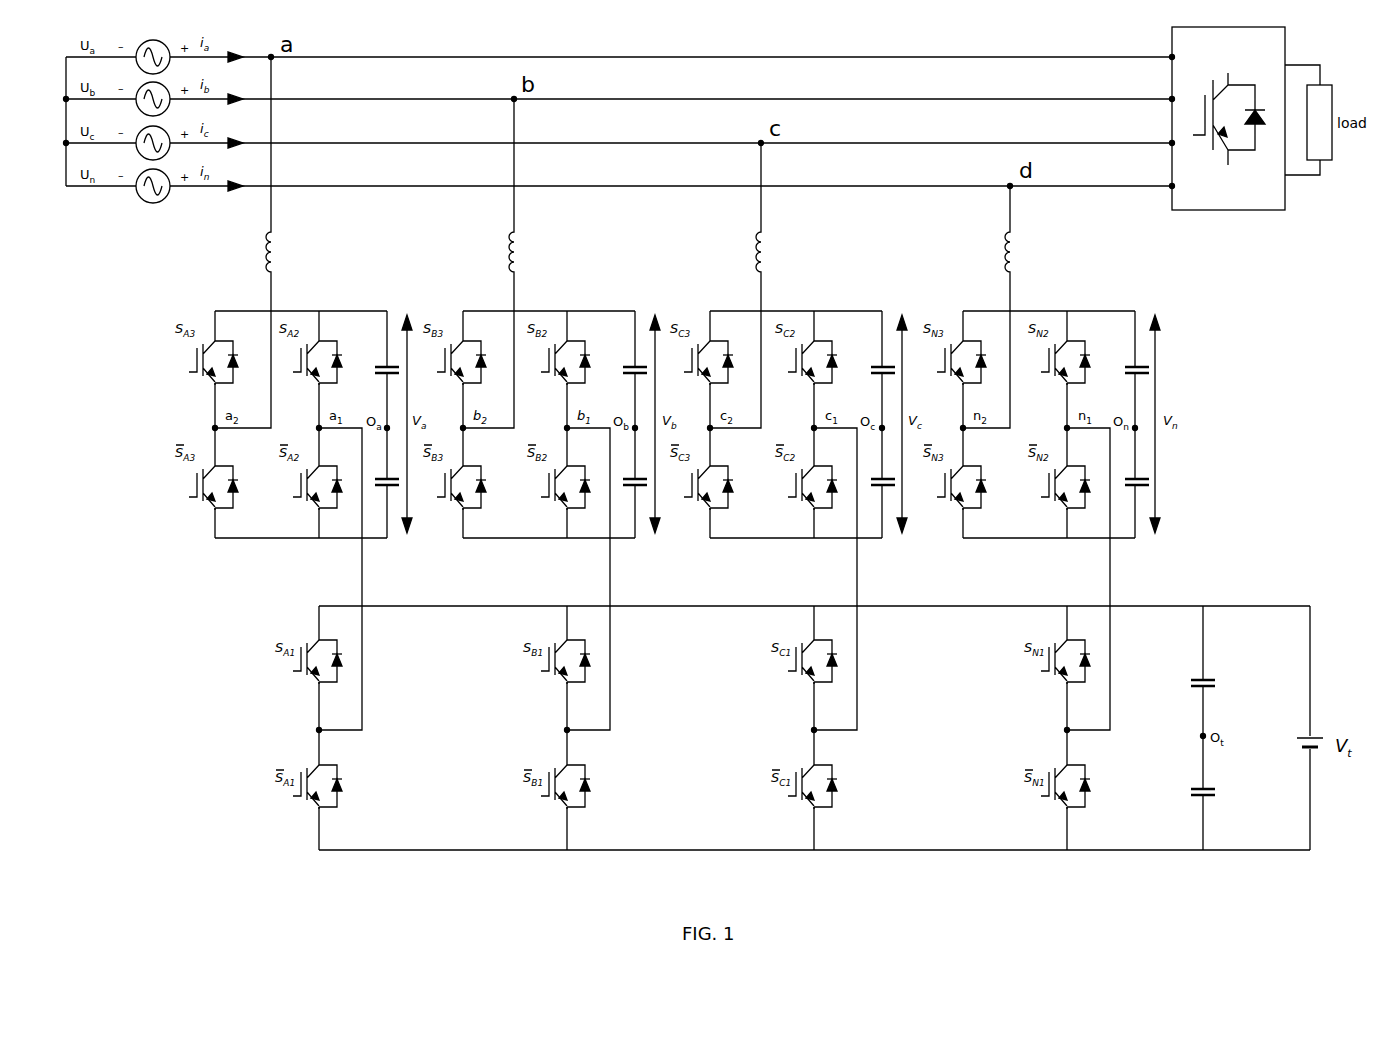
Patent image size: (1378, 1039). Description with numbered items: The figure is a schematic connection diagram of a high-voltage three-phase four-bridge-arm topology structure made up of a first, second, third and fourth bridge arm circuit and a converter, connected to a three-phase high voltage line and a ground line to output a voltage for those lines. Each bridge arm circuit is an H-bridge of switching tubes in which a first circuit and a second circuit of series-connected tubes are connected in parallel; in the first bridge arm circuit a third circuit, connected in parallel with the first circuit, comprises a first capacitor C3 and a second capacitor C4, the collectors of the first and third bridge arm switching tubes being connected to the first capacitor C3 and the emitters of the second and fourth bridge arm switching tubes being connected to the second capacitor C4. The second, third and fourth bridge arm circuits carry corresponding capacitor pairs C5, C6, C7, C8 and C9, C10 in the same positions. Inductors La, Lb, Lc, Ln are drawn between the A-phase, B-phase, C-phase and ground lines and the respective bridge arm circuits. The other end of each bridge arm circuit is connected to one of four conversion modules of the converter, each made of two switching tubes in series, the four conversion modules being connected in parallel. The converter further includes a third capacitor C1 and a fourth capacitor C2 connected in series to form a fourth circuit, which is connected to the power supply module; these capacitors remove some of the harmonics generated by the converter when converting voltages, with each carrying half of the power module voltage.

The third capacitor C1 is at (1209, 671).
The fourth capacitor C2 is at (1209, 780).
The first capacitor C3 is at (381, 363).
The second capacitor C4 is at (381, 475).
The capacitor C5 is at (629, 363).
The capacitor C6 is at (629, 475).
The capacitor C7 is at (877, 363).
The capacitor C8 is at (877, 475).
The capacitor C9 is at (1131, 363).
The capacitor C10 is at (1129, 475).
The inductor La is at (257, 242).
The inductor Lb is at (504, 263).
The inductor Lc is at (751, 285).
The inductor Ln is at (1003, 307).